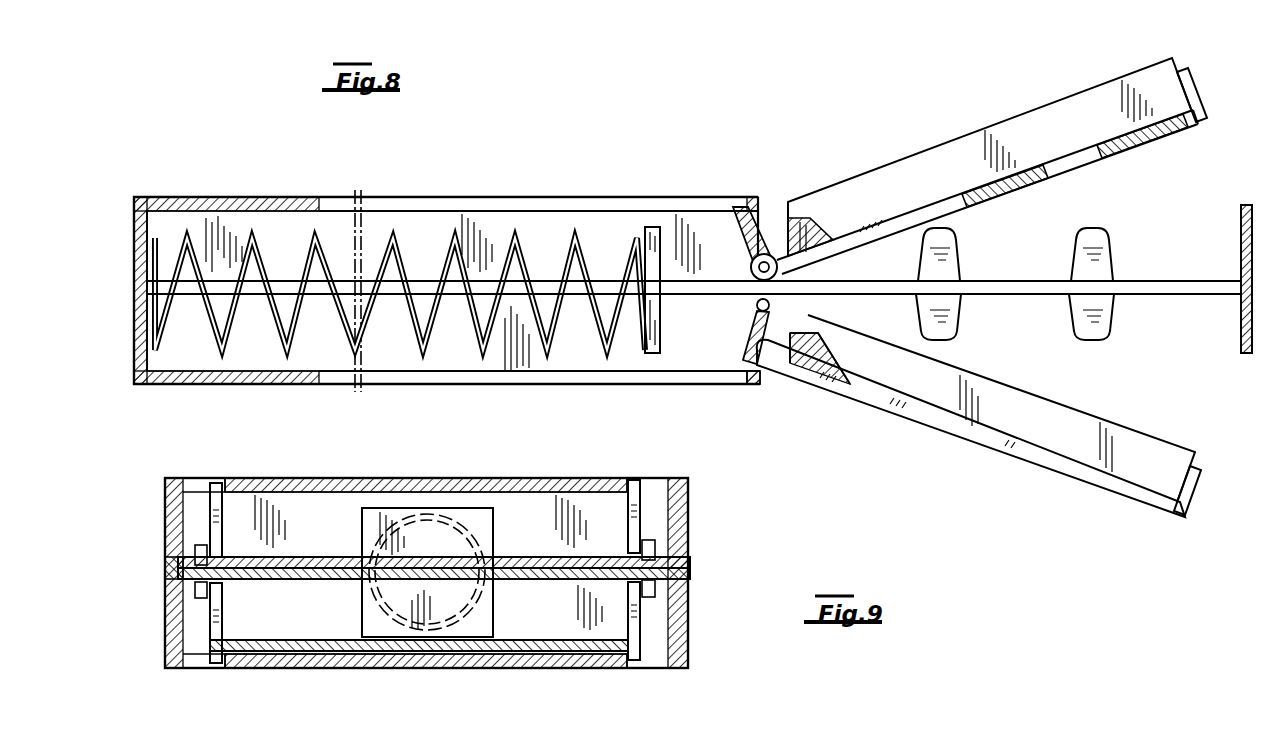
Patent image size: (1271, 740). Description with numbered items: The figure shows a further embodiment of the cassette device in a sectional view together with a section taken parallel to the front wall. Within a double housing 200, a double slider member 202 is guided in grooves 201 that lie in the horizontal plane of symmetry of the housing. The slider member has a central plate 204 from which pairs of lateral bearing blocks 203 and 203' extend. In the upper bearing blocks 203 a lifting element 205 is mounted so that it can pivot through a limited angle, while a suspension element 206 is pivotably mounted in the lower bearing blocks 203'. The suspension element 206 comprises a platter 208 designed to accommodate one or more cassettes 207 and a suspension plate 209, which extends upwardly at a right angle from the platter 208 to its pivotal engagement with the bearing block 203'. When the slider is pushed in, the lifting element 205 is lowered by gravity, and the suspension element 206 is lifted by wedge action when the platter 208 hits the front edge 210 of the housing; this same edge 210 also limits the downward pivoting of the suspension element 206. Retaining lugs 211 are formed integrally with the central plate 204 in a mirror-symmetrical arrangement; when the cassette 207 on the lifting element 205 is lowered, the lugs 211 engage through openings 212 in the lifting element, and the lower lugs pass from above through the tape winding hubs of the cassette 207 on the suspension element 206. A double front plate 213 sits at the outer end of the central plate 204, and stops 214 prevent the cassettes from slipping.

In FIG. 8, the double housing 200 is at (275, 193).
In FIG. 9, the double housing 200 is at (690, 525).
In FIG. 8, the grooves 201 is at (470, 300).
In FIG. 9, the grooves 201 is at (180, 566).
In FIG. 8, the double slider member 202 is at (1170, 280).
In FIG. 9, the double slider member 202 is at (542, 580).
In FIG. 8, the upper bearing blocks 203 is at (734, 219).
In FIG. 9, the upper bearing blocks 203 is at (429, 500).
In FIG. 8, the lower bearing blocks 203' is at (720, 318).
In FIG. 9, the lower bearing blocks 203' is at (441, 621).
In FIG. 8, the central plate 204 is at (1030, 282).
In FIG. 9, the central plate 204 is at (302, 576).
In FIG. 8, the lifting element 205 is at (975, 190).
In FIG. 9, the lifting element 205 is at (552, 556).
In FIG. 8, the suspension element 206 is at (940, 440).
In FIG. 9, the suspension element 206 is at (536, 652).
In FIG. 8, the cassette 207 is at (1072, 112).
In FIG. 8, the platter 208 is at (1062, 468).
In FIG. 8, the suspension plate 209 is at (752, 335).
In FIG. 9, the suspension plate 209 is at (222, 640).
In FIG. 8, the front edge 210 is at (762, 384).
In FIG. 8, the retaining lugs 211 is at (956, 252).
In FIG. 8, the openings 212 is at (920, 212).
In FIG. 8, the double front plate 213 is at (1240, 344).
In FIG. 8, the stops 214 is at (1198, 96).